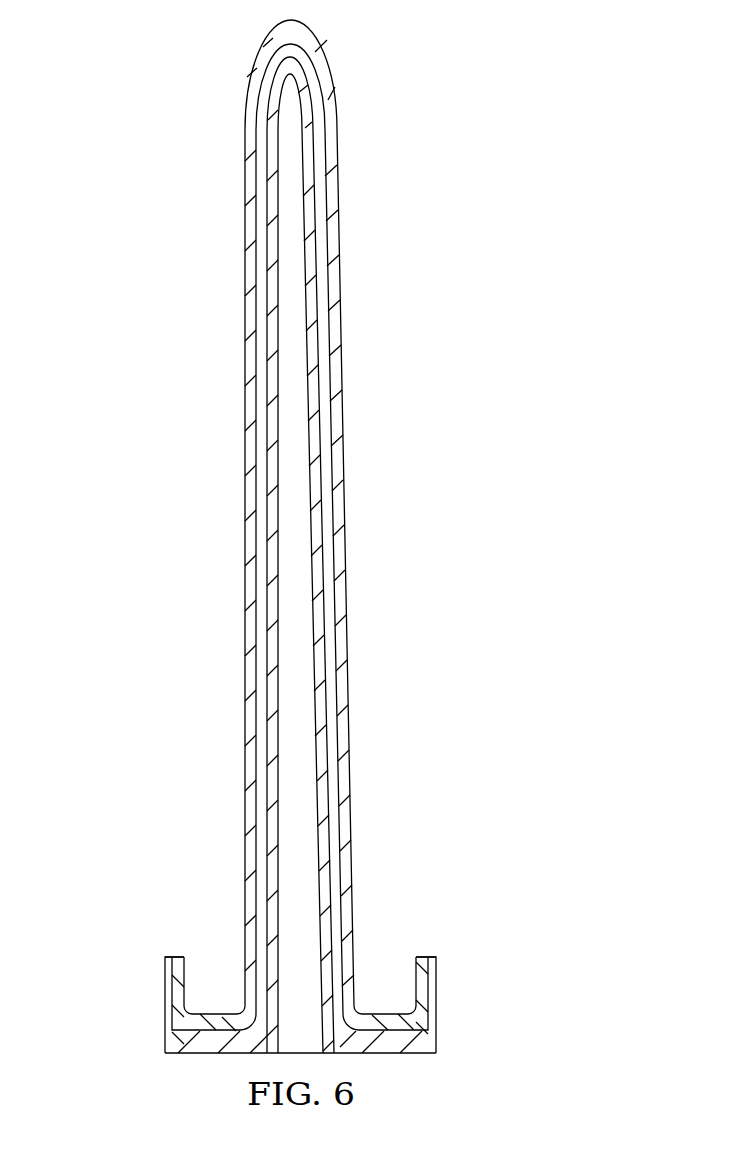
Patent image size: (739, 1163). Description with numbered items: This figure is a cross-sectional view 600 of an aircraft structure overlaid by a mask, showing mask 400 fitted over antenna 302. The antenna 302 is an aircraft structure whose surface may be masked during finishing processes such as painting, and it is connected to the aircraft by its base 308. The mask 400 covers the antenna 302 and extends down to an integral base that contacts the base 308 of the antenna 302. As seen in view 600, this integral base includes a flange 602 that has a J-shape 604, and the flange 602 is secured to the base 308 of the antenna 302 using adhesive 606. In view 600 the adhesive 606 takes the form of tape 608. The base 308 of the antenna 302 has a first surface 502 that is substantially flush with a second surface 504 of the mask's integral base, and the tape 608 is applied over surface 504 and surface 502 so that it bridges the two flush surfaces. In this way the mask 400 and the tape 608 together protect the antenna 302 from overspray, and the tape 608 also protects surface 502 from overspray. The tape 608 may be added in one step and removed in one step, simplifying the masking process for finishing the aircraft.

The view 600 is at (409, 80).
The mask 400 is at (226, 389).
The antenna 302 is at (259, 518).
The base 308 is at (142, 1045).
The first surface 502 is at (438, 1050).
The second surface 504 is at (437, 977).
The adhesive 606 is at (437, 1018).
The tape 608 is at (165, 990).
The flange 602 is at (417, 966).
The J-shape 604 is at (186, 961).